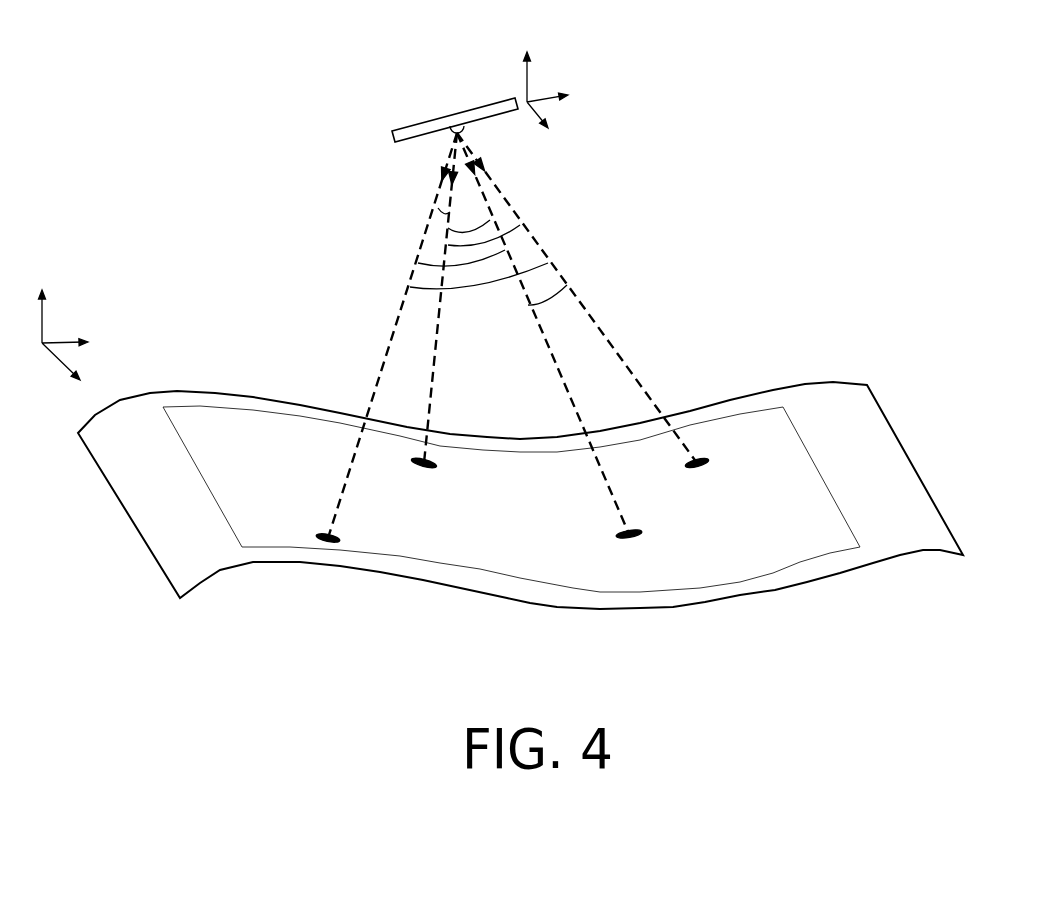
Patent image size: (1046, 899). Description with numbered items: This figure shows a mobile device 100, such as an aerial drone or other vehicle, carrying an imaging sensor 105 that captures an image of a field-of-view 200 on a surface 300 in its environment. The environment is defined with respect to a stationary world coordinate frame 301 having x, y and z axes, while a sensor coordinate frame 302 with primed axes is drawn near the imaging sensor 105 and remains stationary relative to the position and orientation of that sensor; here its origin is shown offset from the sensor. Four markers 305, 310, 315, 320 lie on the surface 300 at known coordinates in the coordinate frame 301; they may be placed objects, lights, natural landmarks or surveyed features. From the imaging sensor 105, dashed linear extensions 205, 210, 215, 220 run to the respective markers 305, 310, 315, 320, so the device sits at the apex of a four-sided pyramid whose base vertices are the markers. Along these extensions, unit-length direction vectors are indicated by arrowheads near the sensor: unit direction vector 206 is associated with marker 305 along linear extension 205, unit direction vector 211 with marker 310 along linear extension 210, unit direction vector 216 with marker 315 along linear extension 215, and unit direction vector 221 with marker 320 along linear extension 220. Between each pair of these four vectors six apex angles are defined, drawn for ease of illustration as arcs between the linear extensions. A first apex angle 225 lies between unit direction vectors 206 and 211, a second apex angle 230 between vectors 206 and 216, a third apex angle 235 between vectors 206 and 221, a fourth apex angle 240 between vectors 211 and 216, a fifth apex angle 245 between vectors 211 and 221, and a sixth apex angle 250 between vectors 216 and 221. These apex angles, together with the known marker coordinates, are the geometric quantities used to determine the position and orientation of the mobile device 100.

The mobile device 100 is at (412, 127).
The imaging sensor 105 is at (458, 126).
The field-of-view 200 is at (203, 458).
The surface 300 is at (350, 563).
The linear extension 205 is at (437, 368).
The linear extension 210 is at (378, 385).
The linear extension 215 is at (567, 388).
The linear extension 220 is at (647, 388).
The unit direction vector 206 is at (447, 178).
The unit direction vector 211 is at (447, 159).
The unit direction vector 216 is at (470, 158).
The unit direction vector 221 is at (466, 146).
The first apex angle 225 is at (438, 208).
The second apex angle 230 is at (490, 220).
The third apex angle 235 is at (520, 225).
The fourth apex angle 240 is at (418, 263).
The fifth apex angle 245 is at (548, 263).
The sixth apex angle 250 is at (567, 285).
The marker 305 is at (437, 467).
The marker 310 is at (340, 538).
The marker 315 is at (642, 537).
The marker 320 is at (707, 462).
The coordinate frame 301 is at (73, 312).
The sensor coordinate frame 302 is at (575, 48).